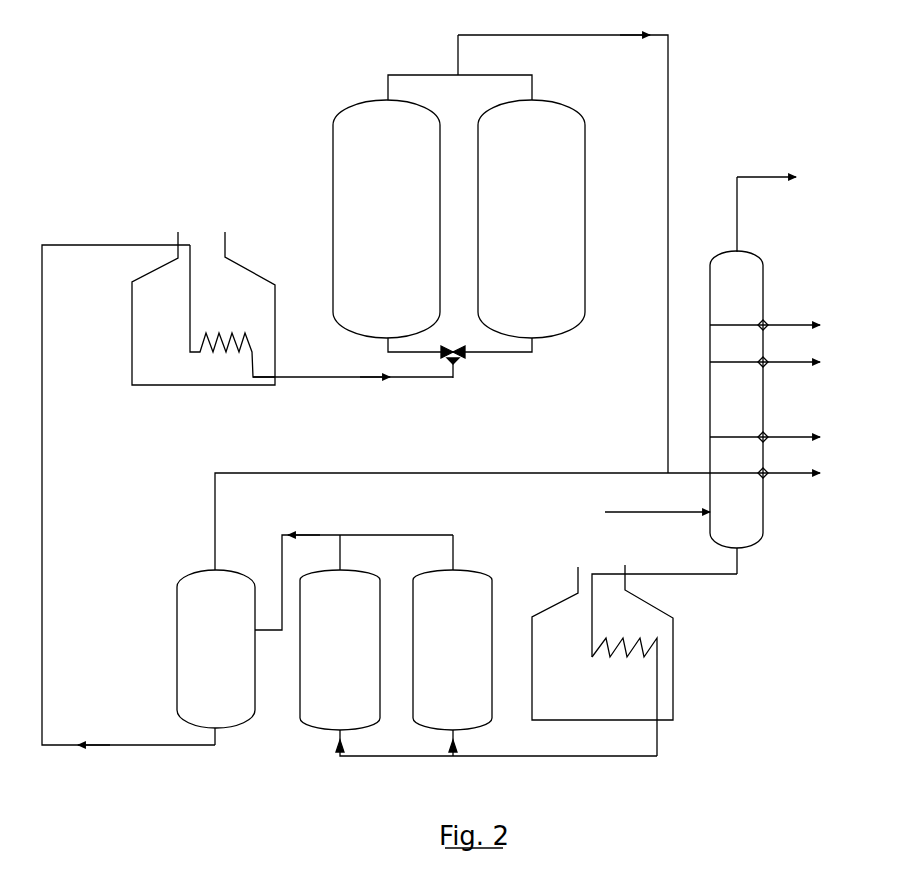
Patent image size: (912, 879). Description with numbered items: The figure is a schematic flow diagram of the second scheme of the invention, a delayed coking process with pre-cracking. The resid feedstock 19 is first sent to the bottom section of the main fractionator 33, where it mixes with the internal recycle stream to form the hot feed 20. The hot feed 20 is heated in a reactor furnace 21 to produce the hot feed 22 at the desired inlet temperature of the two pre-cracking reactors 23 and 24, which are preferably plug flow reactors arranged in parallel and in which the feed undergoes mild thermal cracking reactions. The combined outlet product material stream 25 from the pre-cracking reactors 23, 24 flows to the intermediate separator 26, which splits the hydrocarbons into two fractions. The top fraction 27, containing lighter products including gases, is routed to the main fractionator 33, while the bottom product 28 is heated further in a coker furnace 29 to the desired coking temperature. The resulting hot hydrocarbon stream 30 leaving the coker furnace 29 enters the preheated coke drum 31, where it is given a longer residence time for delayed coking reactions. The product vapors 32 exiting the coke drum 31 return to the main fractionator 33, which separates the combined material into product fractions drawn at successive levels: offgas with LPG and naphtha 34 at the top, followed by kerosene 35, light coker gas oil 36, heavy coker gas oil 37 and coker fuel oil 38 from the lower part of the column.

The resid feedstock 19 is at (238, 263).
The hot feed 20 is at (677, 574).
The reactor furnace 21 is at (673, 632).
The hot feed 22 is at (512, 756).
The pre-cracking reactor 23 is at (380, 597).
The pre-cracking reactor 24 is at (492, 597).
The combined outlet product material stream 25 is at (300, 535).
The intermediate separator 26 is at (180, 588).
The top fraction 27 is at (245, 473).
The bottom product 28 is at (127, 745).
The coker furnace 29 is at (645, 512).
The hot hydrocarbon stream 30 is at (313, 377).
The coke drum 31 is at (478, 218).
The product vapors 32 is at (572, 35).
The main fractionator 33 is at (763, 285).
The offgas with LPG and naphtha 34 is at (782, 177).
The kerosene 35 is at (776, 325).
The light coker gas oil 36 is at (776, 367).
The heavy coker gas oil 37 is at (775, 437).
The coker fuel oil 38 is at (775, 478).